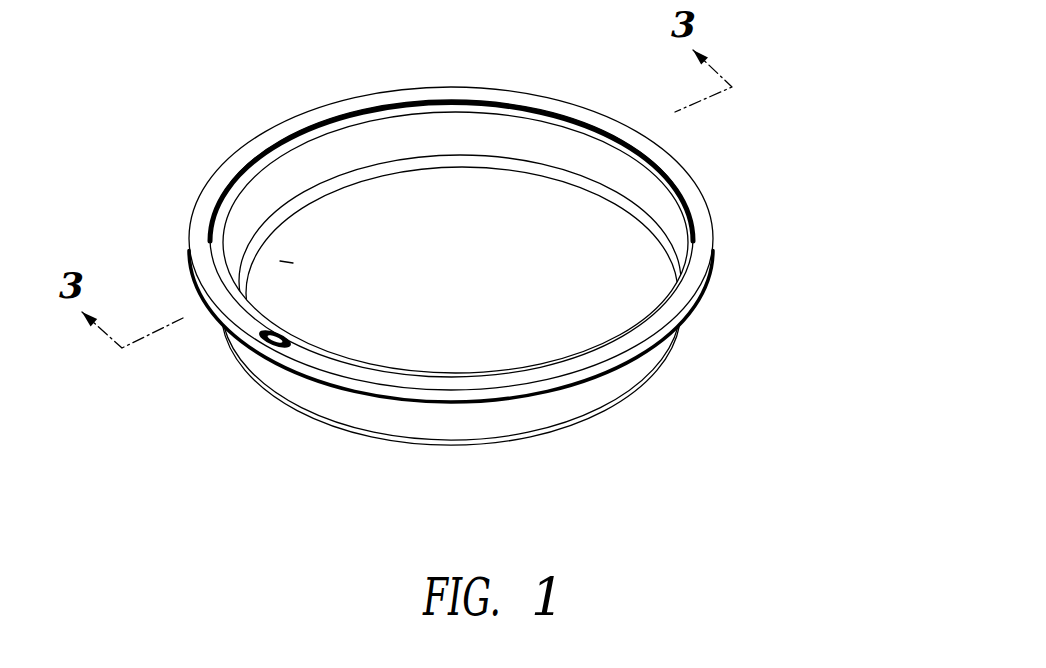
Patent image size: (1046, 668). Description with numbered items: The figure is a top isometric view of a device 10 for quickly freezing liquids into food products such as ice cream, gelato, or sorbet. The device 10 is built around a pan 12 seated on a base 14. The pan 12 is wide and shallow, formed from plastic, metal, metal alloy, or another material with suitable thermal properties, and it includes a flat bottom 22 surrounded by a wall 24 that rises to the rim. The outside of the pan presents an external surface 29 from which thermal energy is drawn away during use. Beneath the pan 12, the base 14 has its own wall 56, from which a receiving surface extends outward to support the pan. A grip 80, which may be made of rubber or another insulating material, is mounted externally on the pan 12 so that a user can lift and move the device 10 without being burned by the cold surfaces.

The device 10 is at (142, 58).
The pan 12 is at (462, 190).
The base 14 is at (605, 392).
The flat bottom 22 is at (635, 295).
The wall 24 is at (664, 220).
The external surface 29 is at (287, 262).
The wall 56 is at (305, 392).
The grip 80 is at (400, 95).